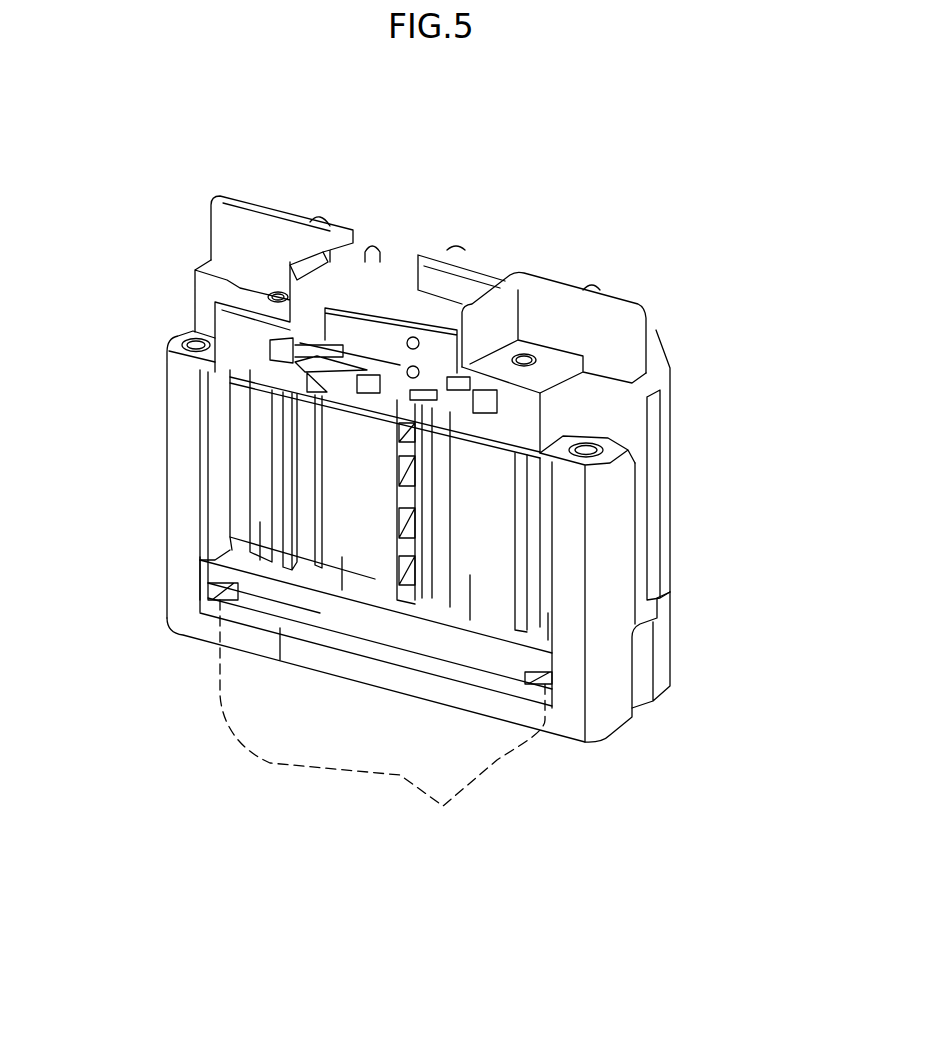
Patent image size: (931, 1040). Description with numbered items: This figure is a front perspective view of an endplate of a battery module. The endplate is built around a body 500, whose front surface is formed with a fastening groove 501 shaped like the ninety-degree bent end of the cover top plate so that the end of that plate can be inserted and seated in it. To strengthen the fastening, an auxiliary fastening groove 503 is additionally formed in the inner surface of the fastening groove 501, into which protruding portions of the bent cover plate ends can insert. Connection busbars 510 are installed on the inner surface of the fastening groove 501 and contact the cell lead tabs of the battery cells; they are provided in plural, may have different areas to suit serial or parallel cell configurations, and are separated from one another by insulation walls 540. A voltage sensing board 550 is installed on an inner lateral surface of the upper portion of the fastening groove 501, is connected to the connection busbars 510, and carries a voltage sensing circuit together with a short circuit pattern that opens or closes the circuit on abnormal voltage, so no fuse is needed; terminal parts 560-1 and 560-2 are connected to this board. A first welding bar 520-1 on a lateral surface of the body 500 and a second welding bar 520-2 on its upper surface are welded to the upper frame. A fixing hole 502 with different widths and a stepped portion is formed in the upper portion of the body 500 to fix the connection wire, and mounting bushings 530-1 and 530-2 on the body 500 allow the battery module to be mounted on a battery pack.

The body 500 is at (653, 323).
The fastening groove 501 is at (548, 613).
The fixing hole 502 is at (375, 248).
The auxiliary fastening groove 503 is at (382, 721).
The connection busbar 510 is at (470, 575).
The first welding bar 520-1 is at (662, 413).
The second welding bar 520-2 is at (480, 273).
The mounting bushing 530-1 is at (180, 337).
The mounting bushing 530-2 is at (590, 450).
The insulation wall 540 is at (520, 535).
The voltage sensing board 550 is at (393, 347).
The terminal part 560-1 is at (533, 358).
The terminal part 560-2 is at (277, 291).